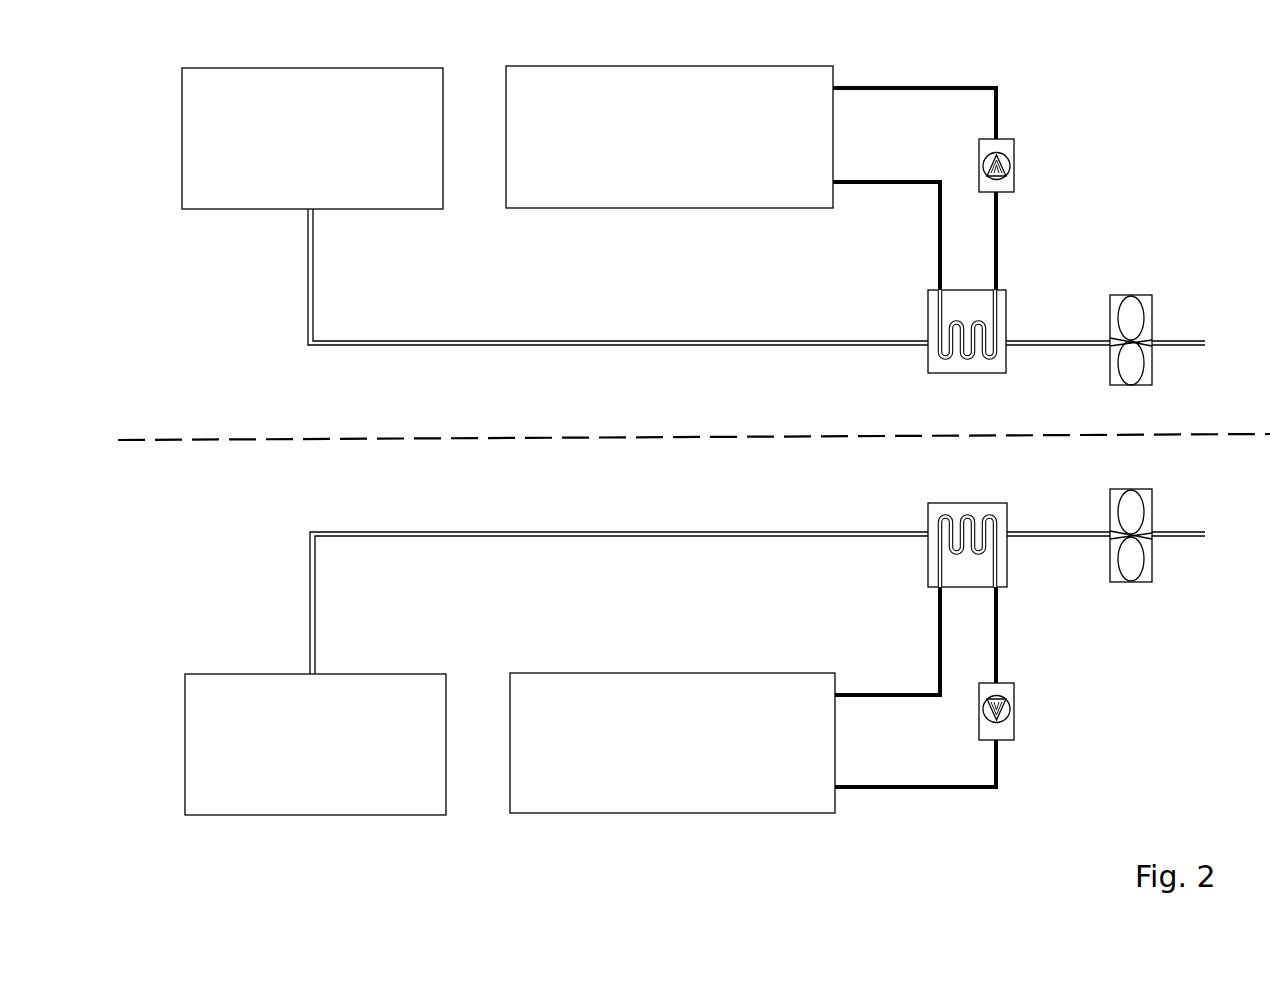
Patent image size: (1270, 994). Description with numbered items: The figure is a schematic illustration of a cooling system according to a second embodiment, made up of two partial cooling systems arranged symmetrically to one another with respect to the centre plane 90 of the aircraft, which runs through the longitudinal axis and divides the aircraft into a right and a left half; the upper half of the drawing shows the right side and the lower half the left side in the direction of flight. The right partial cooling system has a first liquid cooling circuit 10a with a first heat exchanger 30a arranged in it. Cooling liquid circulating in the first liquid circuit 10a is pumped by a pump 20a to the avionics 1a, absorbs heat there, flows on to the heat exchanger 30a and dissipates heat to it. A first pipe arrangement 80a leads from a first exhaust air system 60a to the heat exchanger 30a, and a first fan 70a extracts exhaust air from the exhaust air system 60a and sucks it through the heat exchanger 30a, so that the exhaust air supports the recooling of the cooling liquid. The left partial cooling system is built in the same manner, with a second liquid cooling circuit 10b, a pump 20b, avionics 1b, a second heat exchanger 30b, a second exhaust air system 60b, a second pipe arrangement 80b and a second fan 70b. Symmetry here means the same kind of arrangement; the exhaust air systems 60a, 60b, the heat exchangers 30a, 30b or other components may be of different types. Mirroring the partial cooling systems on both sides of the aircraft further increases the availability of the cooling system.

The avionics 1a is at (602, 210).
The avionics 1b is at (557, 672).
The first liquid cooling circuit 10a is at (1025, 238).
The second liquid cooling circuit 10b is at (1015, 648).
The pump 20a is at (1014, 166).
The pump 20b is at (1014, 708).
The first heat exchanger 30a is at (1010, 302).
The second heat exchanger 30b is at (1012, 512).
The first exhaust air system 60a is at (400, 215).
The second exhaust air system 60b is at (222, 673).
The first fan 70a is at (1140, 293).
The second fan 70b is at (1130, 486).
The first pipe arrangement 80a is at (590, 348).
The second pipe arrangement 80b is at (407, 535).
The centre plane 90 is at (237, 442).